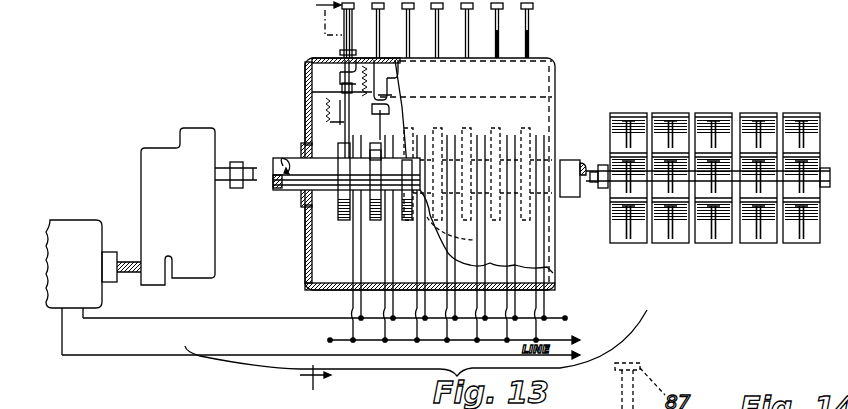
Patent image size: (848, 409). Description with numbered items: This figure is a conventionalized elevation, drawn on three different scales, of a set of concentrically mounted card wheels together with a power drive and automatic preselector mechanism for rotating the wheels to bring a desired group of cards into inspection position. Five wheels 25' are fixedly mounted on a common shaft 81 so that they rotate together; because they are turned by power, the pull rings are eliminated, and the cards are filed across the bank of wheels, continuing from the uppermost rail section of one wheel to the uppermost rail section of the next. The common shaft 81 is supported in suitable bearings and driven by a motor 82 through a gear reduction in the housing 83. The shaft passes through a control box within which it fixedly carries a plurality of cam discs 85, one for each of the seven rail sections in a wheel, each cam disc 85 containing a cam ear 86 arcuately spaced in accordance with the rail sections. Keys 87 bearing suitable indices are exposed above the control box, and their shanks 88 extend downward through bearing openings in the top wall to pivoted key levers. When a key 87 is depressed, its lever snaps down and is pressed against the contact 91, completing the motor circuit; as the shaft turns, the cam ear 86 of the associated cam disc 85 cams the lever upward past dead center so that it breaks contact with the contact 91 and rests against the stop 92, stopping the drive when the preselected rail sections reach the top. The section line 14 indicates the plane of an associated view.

The section line / reference 14 is at (307, 204).
The wheels 25' is at (715, 157).
The common shaft 81 is at (567, 197).
The motor 82 is at (68, 235).
The housing 83 is at (165, 200).
The cam discs 85 is at (373, 218).
The cam ear 86 is at (373, 157).
The keys 87 is at (557, 100).
The shanks 88 is at (497, 41).
The contact 91 is at (378, 116).
The stop 92 is at (377, 84).